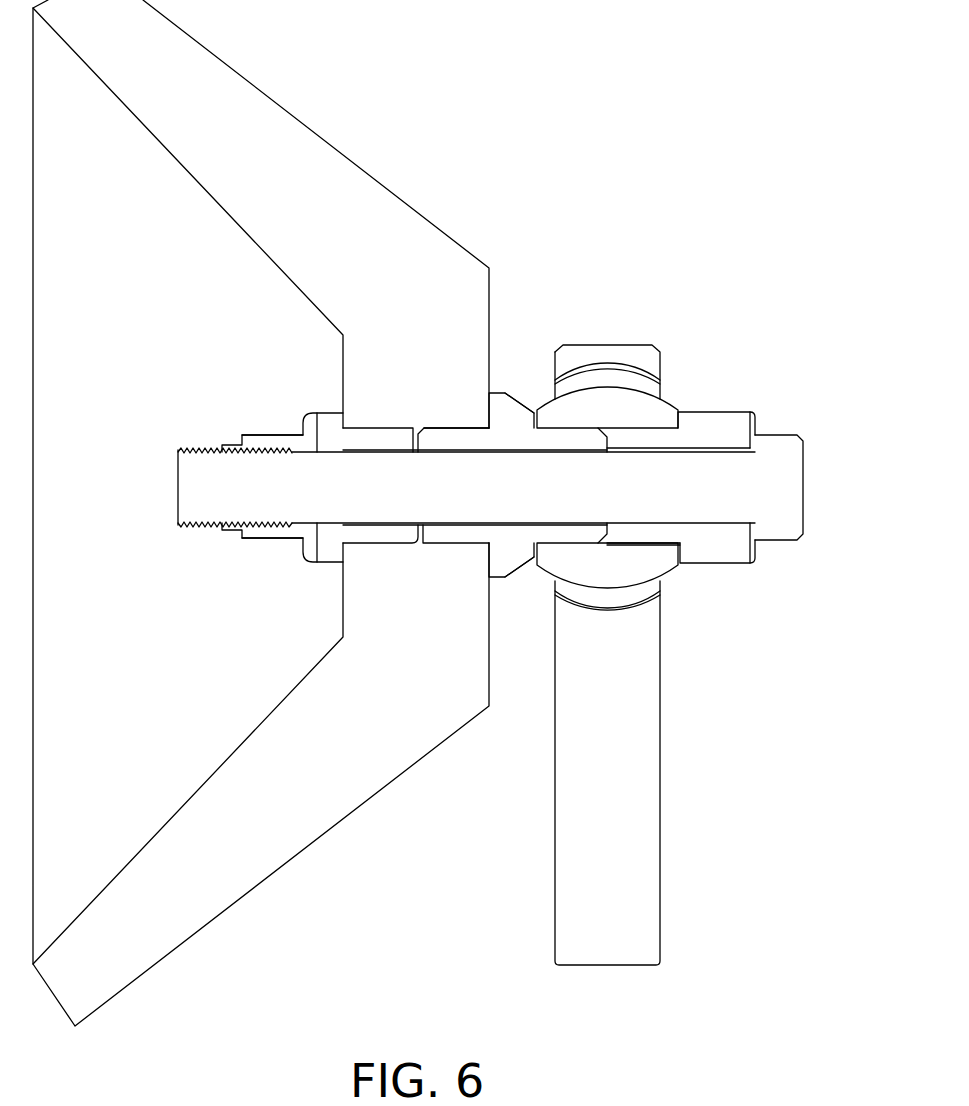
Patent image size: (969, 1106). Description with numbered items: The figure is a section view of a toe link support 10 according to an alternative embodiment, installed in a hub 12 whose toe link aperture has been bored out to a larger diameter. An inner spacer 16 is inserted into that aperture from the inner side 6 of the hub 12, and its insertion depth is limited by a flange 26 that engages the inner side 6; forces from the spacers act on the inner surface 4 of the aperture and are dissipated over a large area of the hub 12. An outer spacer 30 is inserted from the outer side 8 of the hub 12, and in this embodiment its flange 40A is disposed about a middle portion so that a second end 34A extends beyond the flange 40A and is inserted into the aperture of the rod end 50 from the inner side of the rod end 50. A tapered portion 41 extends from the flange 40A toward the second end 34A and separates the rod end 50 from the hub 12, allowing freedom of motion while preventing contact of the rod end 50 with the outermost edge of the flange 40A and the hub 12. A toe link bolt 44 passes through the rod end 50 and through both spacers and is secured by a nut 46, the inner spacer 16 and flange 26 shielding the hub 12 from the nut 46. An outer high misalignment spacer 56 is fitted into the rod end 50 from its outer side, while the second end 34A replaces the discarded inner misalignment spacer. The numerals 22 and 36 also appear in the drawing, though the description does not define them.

The inner surface 4 is at (435, 440).
The inner side 6 is at (261, 513).
The outer side 8 is at (524, 616).
The toe link support 10 is at (524, 506).
The hub 12 is at (343, 175).
The inner spacer 16 is at (298, 512).
The insert flange face 22 is at (382, 552).
The flange 26 is at (325, 422).
The outer spacer 30 is at (467, 531).
The second end 34A is at (587, 443).
The sleeve 36 is at (475, 525).
The flange 40A is at (532, 440).
The tapered portion 41 is at (517, 412).
The toe link bolt 44 is at (780, 483).
The nut 46 is at (262, 447).
The rod end 50 is at (612, 355).
The outer high misalignment spacer 56 is at (717, 428).